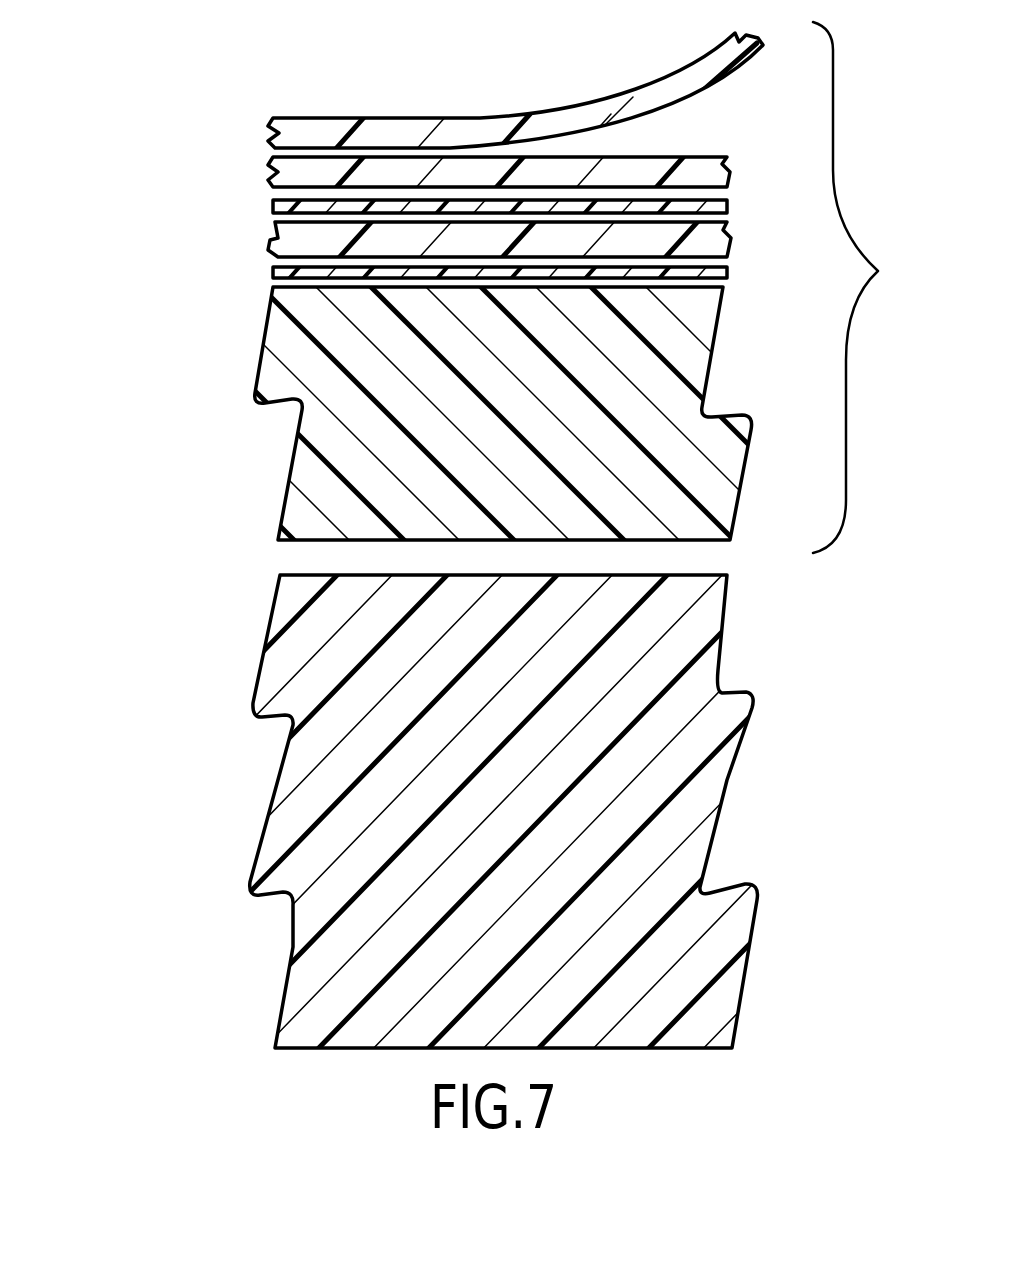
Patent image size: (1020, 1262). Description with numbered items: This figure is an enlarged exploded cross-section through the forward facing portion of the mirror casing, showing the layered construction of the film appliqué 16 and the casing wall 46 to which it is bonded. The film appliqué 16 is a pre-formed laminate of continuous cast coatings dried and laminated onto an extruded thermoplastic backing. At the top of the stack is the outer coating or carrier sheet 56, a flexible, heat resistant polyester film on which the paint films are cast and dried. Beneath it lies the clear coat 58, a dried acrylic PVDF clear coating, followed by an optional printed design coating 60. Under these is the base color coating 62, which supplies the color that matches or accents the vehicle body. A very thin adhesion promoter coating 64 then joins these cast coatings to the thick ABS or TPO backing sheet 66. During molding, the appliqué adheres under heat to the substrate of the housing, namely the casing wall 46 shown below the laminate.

The film appliqué 16 is at (871, 287).
The casing wall 46 is at (670, 845).
The carrier sheet 56 is at (270, 128).
The clear coat 58 is at (270, 177).
The design coating 60 is at (270, 212).
The base color coating 62 is at (270, 242).
The adhesion promoter coating 64 is at (270, 270).
The thermal plastic backing sheet 66 is at (655, 395).